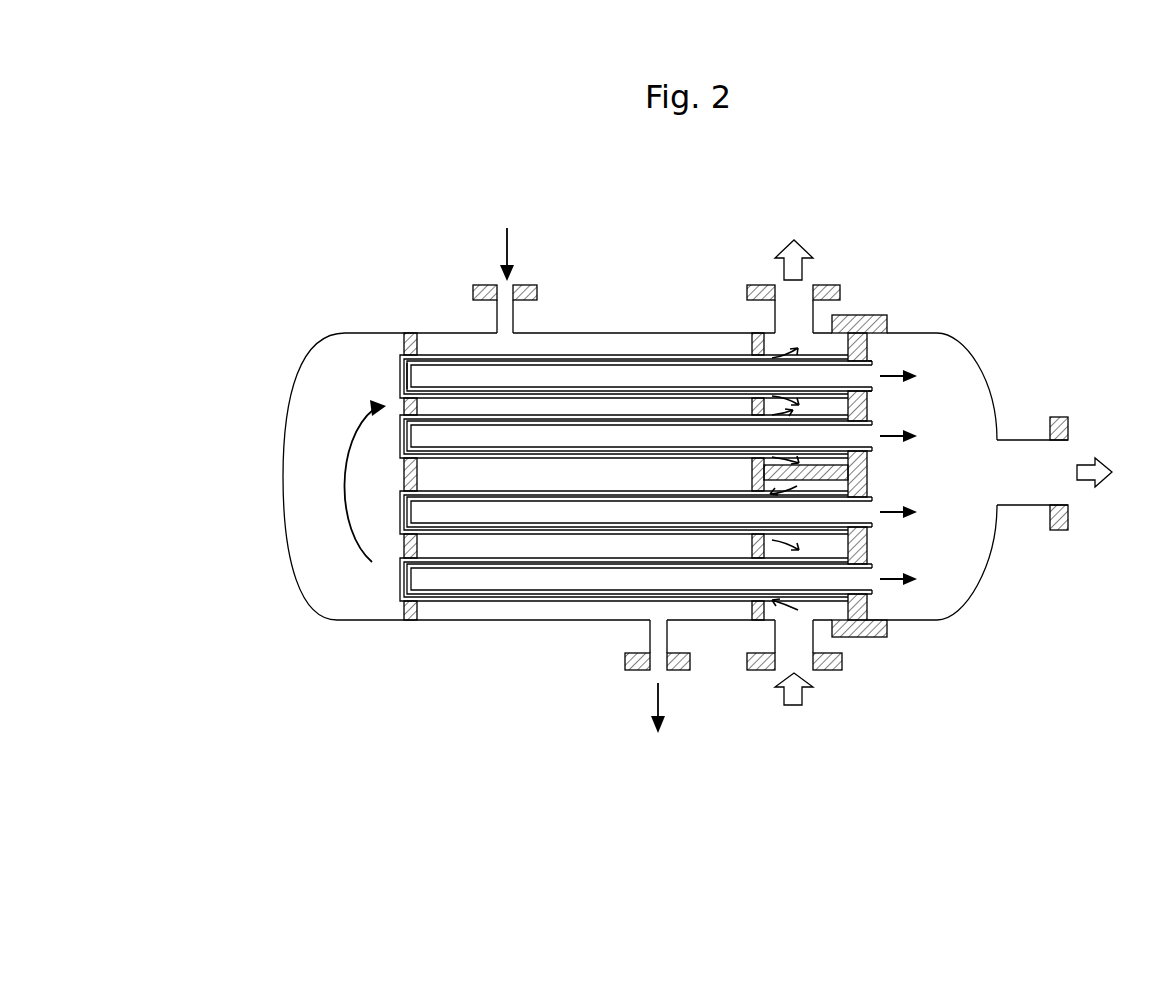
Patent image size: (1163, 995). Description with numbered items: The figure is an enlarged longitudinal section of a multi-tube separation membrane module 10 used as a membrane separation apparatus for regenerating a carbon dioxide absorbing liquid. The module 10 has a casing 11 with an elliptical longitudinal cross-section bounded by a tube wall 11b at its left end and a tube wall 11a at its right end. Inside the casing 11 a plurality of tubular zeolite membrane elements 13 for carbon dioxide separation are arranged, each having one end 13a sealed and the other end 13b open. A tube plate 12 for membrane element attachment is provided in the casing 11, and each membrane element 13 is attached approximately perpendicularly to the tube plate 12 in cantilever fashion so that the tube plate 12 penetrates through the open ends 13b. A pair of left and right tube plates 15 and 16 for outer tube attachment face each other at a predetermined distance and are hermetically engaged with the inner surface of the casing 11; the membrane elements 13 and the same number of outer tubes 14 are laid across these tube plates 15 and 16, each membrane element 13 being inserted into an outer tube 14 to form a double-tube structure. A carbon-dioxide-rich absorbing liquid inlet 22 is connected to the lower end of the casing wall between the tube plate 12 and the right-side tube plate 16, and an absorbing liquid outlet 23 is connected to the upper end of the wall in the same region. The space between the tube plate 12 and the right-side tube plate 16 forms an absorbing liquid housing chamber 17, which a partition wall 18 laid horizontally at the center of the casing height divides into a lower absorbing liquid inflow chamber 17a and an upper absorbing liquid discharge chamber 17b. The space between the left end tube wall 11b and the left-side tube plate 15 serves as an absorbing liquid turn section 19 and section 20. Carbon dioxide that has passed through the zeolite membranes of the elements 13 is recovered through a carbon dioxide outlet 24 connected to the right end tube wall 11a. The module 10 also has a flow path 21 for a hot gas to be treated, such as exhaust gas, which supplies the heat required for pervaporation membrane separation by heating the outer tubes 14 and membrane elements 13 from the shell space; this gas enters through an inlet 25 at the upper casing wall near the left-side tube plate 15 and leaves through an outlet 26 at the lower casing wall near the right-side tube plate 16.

The multi-tube separation membrane module 10 is at (994, 326).
The casing 11 is at (983, 362).
The tube wall at the right end of the casing 11a is at (987, 395).
The tube wall at the left end of the casing 11b is at (283, 424).
The tube plate for membrane element attachment 12 is at (880, 615).
The tubular zeolite membrane element 13 is at (603, 361).
The sealed end 13a is at (396, 377).
The open end 13b is at (875, 372).
The outer tube 14 is at (665, 355).
The left-side tube plate for outer tube attachment 15 is at (421, 342).
The right-side tube plate for outer tube attachment 16 is at (750, 338).
The absorbing liquid housing chamber 17 is at (838, 546).
The absorbing liquid inflow chamber 17a is at (848, 637).
The absorbing liquid discharge chamber 17b is at (835, 343).
The partition wall 18 is at (832, 462).
The absorbing liquid turn section 19 is at (325, 600).
The section 20 is at (957, 583).
The flow path for hot gas to be treated 21 is at (560, 333).
The carbon-dioxide-rich absorbing liquid inlet 22 is at (762, 668).
The absorbing liquid outlet 23 is at (826, 288).
The carbon dioxide outlet 24 is at (1068, 520).
The inlet for hot gas to be treated 25 is at (492, 292).
The outlet for hot gas to be treated 26 is at (633, 668).